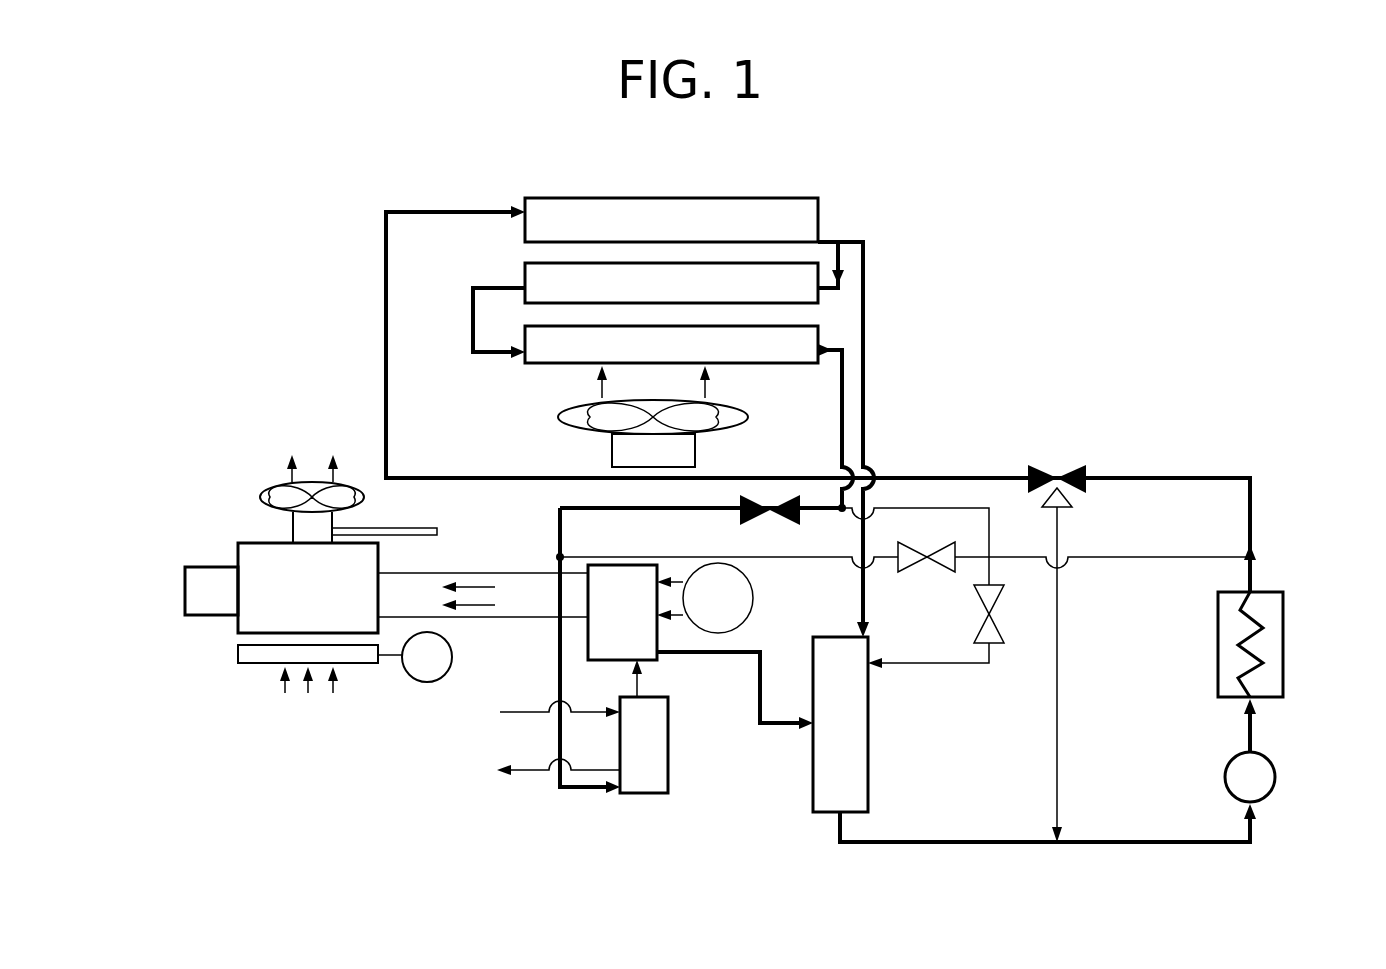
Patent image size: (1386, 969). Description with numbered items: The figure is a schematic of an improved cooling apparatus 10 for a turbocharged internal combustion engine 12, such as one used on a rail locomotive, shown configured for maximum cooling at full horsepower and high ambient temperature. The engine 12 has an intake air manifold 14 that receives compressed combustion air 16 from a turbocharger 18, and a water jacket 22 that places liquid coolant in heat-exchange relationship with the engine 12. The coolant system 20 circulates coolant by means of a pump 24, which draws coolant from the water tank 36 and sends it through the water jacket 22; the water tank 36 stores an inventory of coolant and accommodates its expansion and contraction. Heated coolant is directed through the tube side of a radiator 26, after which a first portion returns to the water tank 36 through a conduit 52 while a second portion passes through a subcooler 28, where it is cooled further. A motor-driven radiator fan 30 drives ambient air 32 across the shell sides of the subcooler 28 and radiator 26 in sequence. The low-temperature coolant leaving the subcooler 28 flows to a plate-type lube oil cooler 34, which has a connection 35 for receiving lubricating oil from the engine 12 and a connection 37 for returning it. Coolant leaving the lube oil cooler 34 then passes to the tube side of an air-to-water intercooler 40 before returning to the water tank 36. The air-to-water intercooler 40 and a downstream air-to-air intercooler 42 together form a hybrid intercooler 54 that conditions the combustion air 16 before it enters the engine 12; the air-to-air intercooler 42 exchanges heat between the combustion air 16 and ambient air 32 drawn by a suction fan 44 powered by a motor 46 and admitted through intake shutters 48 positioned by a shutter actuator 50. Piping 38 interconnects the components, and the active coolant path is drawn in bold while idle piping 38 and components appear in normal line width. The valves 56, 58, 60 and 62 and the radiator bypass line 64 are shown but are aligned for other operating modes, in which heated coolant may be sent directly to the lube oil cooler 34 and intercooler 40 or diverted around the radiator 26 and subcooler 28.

The cooling apparatus 10 is at (245, 819).
The turbocharged internal combustion engine 12 is at (1285, 607).
The intake air manifold 14 is at (194, 608).
The compressed combustion air 16 is at (480, 587).
The turbocharger 18 is at (700, 614).
The coolant system 20 is at (1134, 681).
The water jacket 22 is at (1263, 663).
The pump 24 is at (1232, 793).
The radiator 26 is at (655, 234).
The subcooler 28 is at (655, 299).
The radiator fan 30 is at (558, 420).
The ambient air 32 is at (708, 375).
The lube oil cooler 34 is at (626, 761).
The connection 35 is at (513, 713).
The water tank 36 is at (824, 738).
The connection 37 is at (535, 772).
The piping 38 is at (386, 432).
The air-to-water intercooler 40 is at (604, 624).
The air-to-air intercooler 42 is at (287, 603).
The suction fan 44 is at (263, 493).
The motor 46 is at (293, 533).
The intake shutters 48 is at (238, 655).
The shutter actuator 50 is at (409, 673).
The conduit 52 is at (866, 412).
The hybrid intercooler 54 is at (459, 533).
The valve 56 is at (928, 550).
The valve 58 is at (1058, 470).
The valve 60 is at (773, 517).
The valve 62 is at (1002, 606).
The radiator bypass line 64 is at (1058, 773).